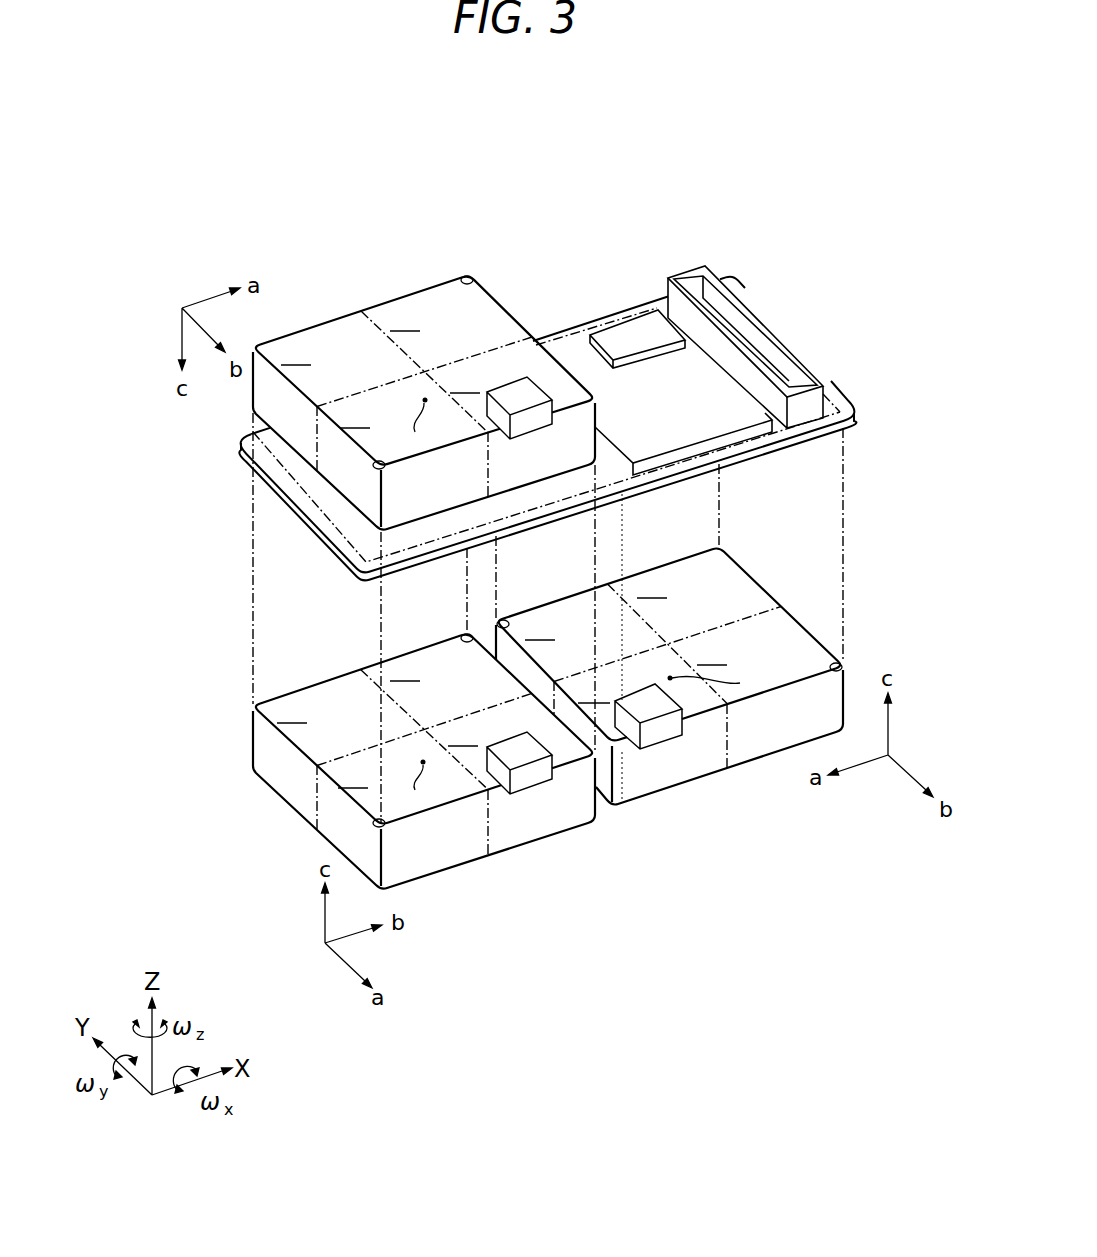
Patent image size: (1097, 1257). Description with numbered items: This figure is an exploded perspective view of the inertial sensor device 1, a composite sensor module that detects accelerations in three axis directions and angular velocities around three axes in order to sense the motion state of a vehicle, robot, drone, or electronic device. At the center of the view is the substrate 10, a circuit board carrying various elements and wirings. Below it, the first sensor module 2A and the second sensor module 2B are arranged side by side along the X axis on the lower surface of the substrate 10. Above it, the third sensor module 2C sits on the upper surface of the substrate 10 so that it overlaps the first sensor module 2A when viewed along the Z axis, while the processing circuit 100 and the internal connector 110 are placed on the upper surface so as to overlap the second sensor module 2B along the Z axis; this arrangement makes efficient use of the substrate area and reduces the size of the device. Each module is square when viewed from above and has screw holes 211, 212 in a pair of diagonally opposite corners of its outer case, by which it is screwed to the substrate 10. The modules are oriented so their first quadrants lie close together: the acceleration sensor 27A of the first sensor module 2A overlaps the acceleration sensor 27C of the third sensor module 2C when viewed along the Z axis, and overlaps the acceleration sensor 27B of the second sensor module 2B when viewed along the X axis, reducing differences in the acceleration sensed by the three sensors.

The inertial sensor device 1 is at (840, 148).
The first sensor module 2A is at (433, 808).
The second sensor module 2B is at (669, 726).
The third sensor module 2C is at (446, 361).
The substrate 10 is at (318, 543).
The processing circuit 100 is at (703, 398).
The internal connector 110 is at (747, 337).
The screw hole 211 is at (373, 467).
The screw hole 212 is at (466, 276).
The acceleration sensor 27A is at (535, 788).
The acceleration sensor 27B is at (664, 751).
The acceleration sensor 27C is at (520, 393).